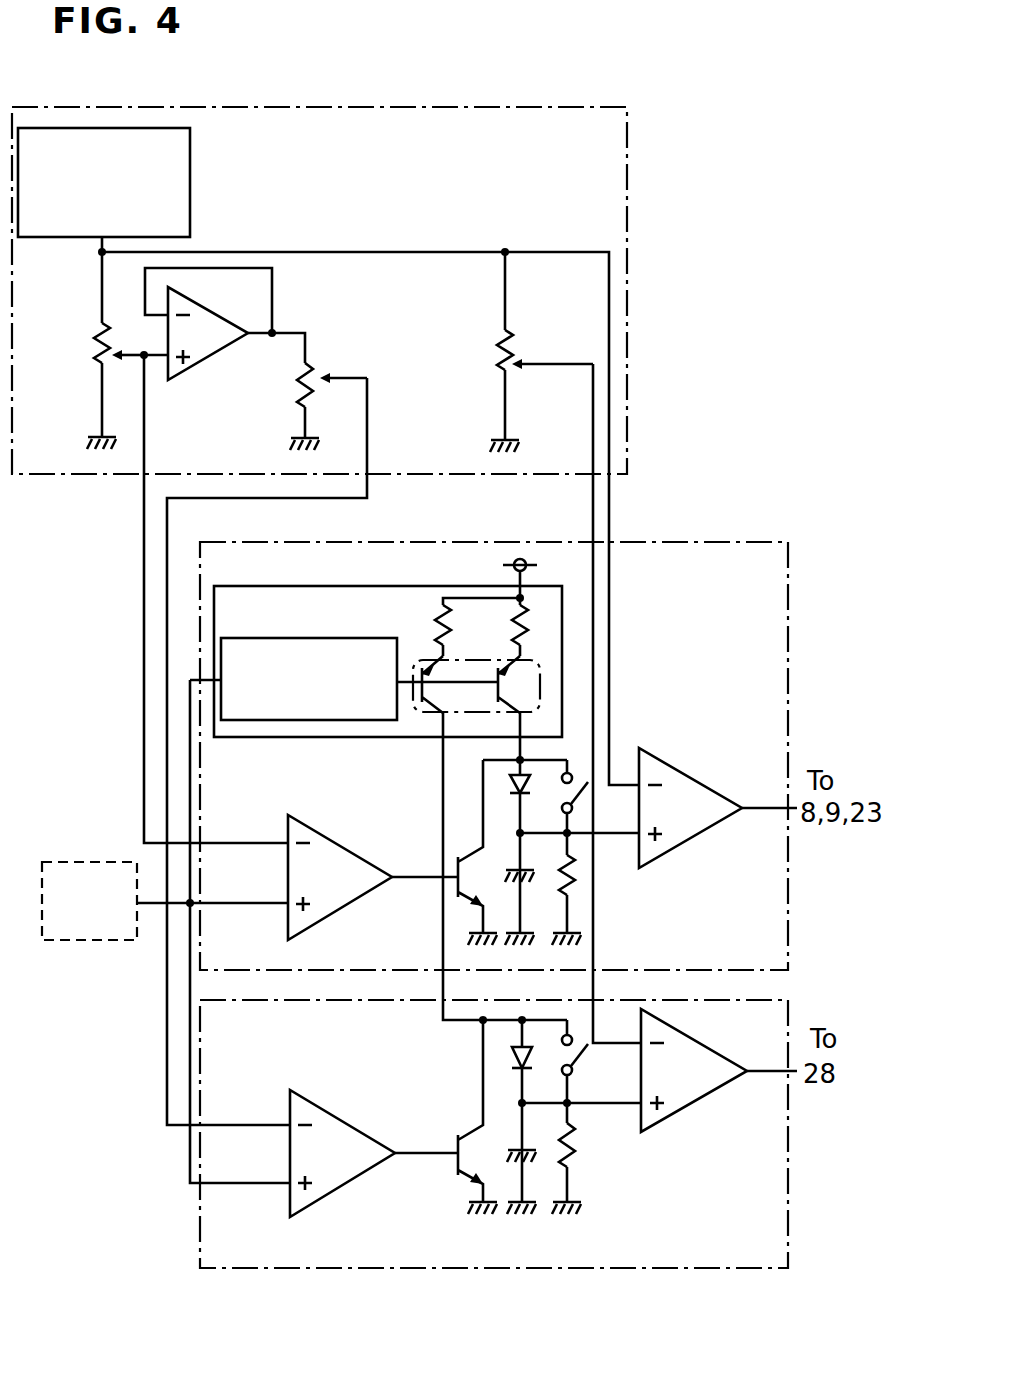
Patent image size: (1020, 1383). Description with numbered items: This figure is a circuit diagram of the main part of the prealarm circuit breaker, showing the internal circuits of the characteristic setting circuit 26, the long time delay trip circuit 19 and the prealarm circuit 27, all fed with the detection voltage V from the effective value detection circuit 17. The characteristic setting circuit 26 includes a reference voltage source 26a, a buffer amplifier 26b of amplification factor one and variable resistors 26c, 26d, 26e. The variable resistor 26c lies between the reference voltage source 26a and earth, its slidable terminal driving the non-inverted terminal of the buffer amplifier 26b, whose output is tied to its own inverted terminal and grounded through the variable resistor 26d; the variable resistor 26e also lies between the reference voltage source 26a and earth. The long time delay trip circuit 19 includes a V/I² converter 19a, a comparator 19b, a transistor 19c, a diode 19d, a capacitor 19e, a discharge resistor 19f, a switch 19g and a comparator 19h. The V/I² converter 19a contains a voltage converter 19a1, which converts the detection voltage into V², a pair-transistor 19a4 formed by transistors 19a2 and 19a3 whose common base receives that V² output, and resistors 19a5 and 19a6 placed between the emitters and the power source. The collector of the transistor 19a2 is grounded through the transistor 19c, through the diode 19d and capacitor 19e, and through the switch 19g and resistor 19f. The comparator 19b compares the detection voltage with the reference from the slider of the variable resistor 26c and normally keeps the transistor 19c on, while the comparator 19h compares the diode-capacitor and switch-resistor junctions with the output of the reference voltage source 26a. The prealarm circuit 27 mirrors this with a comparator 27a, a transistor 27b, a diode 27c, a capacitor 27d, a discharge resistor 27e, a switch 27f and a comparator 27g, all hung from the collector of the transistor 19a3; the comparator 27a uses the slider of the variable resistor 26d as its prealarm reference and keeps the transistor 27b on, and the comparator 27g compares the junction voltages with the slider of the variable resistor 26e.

The effective value detection circuit 17 is at (95, 944).
The long time delay trip circuit 19 is at (697, 543).
The V/I² converter 19a is at (288, 587).
The voltage converter 19a1 is at (310, 638).
The transistor 19a2 is at (517, 698).
The transistor 19a3 is at (430, 704).
The pair-transistor 19a4 is at (548, 716).
The resistor 19a5 is at (532, 624).
The resistor 19a6 is at (455, 624).
The comparator 19b is at (340, 912).
The transistor 19c is at (470, 894).
The diode 19d is at (510, 783).
The capacitor 19e is at (510, 886).
The discharge resistor 19f is at (577, 883).
The switch 19g is at (588, 782).
The comparator 19h is at (716, 822).
The characteristic setting circuit 26 is at (627, 118).
The reference voltage source 26a is at (192, 170).
The buffer amplifier 26b is at (211, 364).
The variable resistor 26c is at (96, 356).
The variable resistor 26d is at (323, 372).
The variable resistor 26e is at (500, 368).
The prealarm circuit 27 is at (658, 1270).
The comparator 27a is at (337, 1196).
The transistor 27b is at (457, 1170).
The diode 27c is at (512, 1060).
The capacitor 27d is at (512, 1162).
The discharge resistor 27e is at (578, 1150).
The switch 27f is at (588, 1044).
The comparator 27g is at (710, 1090).